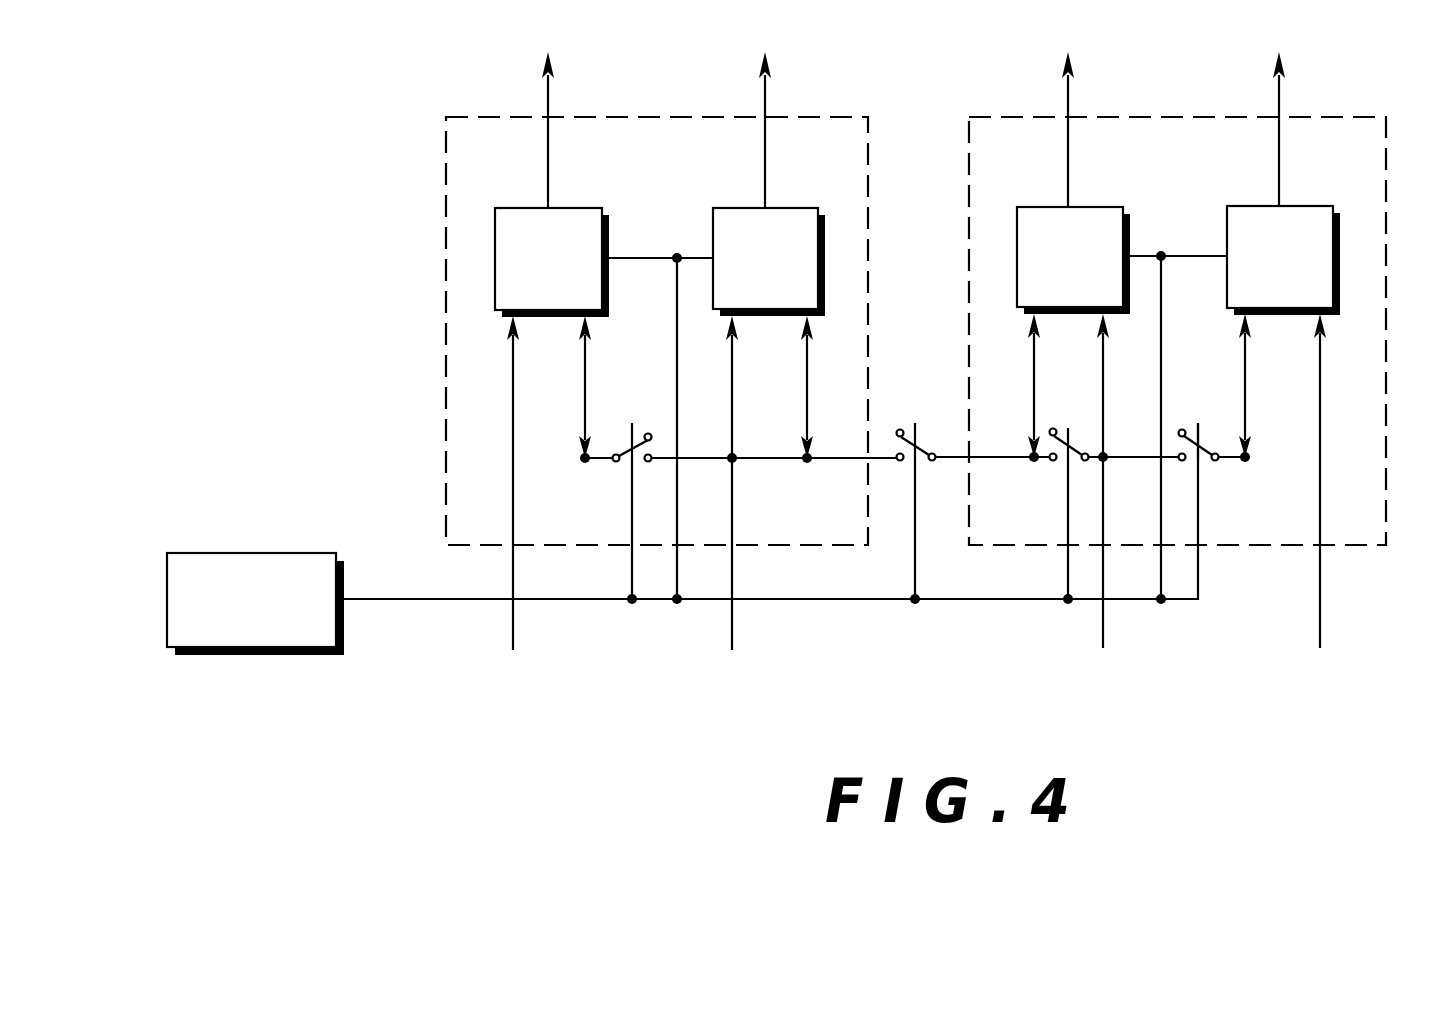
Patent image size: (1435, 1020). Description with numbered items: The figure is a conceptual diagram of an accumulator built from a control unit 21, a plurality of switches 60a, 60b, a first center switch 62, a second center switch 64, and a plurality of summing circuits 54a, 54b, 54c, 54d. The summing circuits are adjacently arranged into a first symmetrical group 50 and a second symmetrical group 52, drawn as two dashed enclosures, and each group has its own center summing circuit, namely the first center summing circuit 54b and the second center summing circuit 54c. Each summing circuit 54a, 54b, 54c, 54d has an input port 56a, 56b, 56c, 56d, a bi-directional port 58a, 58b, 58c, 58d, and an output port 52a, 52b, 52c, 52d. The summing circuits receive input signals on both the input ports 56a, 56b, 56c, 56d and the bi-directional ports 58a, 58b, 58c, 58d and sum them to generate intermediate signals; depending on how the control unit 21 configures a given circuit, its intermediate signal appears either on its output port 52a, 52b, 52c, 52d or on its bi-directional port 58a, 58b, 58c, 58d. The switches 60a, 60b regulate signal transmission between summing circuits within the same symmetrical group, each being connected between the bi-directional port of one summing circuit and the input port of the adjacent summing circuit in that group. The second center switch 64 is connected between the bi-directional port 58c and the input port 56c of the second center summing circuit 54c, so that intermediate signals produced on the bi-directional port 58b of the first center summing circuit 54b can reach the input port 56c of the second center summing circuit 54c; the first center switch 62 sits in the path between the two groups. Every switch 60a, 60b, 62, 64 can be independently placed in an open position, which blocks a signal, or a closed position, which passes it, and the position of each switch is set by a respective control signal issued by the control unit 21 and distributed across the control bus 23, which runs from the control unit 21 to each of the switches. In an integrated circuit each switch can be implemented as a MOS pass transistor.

The control unit 21 is at (222, 553).
The control bus 23 is at (435, 599).
The first symmetrical group 50 is at (848, 113).
The second symmetrical group 52 is at (1362, 113).
The output port 52a is at (547, 92).
The output port 52b is at (763, 92).
The output port 52c is at (1066, 92).
The output port 52d is at (1277, 92).
The summing circuit 54a is at (575, 208).
The first center summing circuit 54b is at (790, 208).
The second center summing circuit 54c is at (1095, 207).
The summing circuit 54d is at (1302, 206).
The input port 56a is at (513, 617).
The input port 56b is at (732, 622).
The input port 56c is at (1104, 623).
The input port 56d is at (1320, 620).
The bi-directional port 58a is at (585, 390).
The bi-directional port 58b is at (807, 390).
The bi-directional port 58c is at (1034, 385).
The bi-directional port 58d is at (1245, 356).
The switch 60a is at (620, 440).
The switch 60b is at (1205, 441).
The first center switch 62 is at (918, 444).
The second center switch 64 is at (1077, 441).